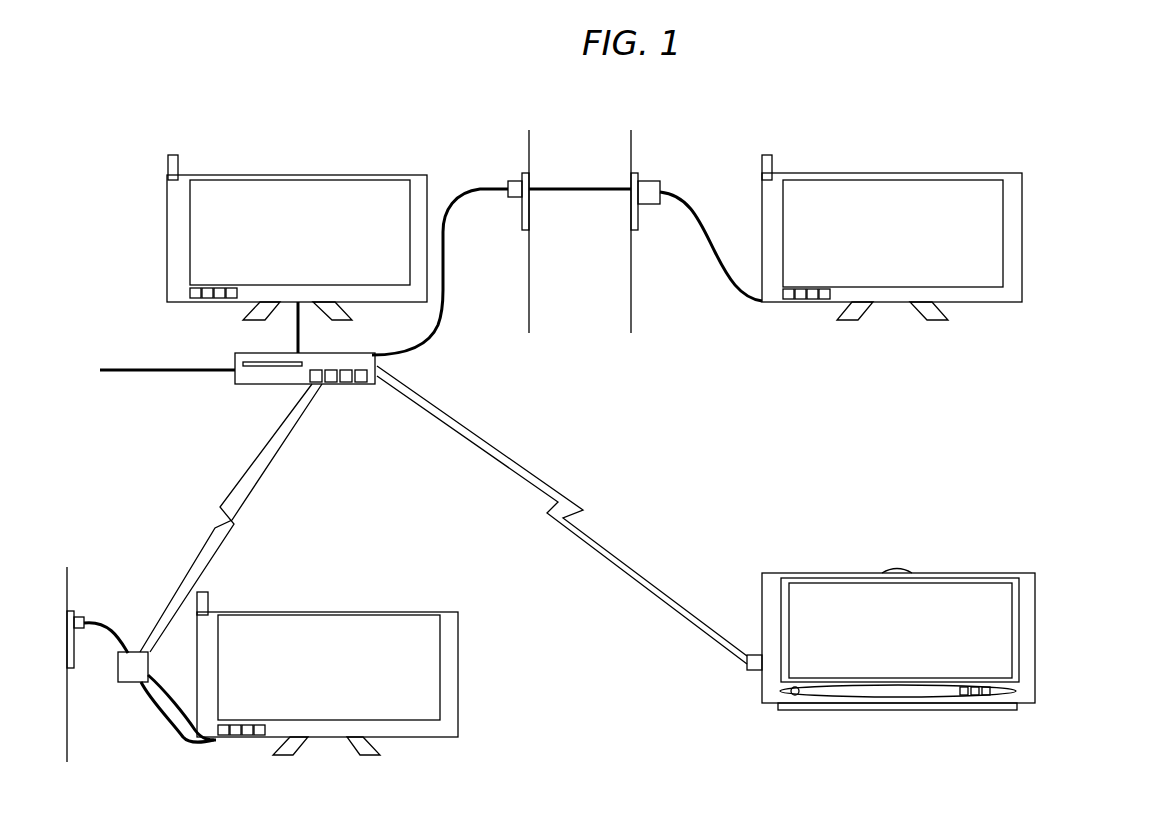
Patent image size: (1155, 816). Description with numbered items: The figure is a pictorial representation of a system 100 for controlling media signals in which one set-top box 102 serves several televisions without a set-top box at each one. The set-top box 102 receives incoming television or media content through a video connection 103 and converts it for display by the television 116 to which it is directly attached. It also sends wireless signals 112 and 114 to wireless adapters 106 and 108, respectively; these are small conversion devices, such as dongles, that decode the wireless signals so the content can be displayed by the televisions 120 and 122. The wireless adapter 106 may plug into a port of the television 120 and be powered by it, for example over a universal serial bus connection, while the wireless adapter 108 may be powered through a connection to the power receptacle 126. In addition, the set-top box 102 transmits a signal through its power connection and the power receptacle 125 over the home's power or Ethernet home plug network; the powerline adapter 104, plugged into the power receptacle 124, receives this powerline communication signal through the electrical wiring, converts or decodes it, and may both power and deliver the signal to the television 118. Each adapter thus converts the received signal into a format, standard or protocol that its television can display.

The system 100 is at (327, 100).
The set-top box 102 is at (275, 377).
The video connection 103 is at (157, 372).
The powerline adapter 104 is at (646, 182).
The wireless adapter 106 is at (747, 662).
The wireless adapter 108 is at (135, 668).
The wireless signal 112 is at (562, 515).
The wireless signal 114 is at (231, 518).
The television 116 is at (314, 234).
The television 118 is at (905, 234).
The television 120 is at (978, 622).
The television 122 is at (341, 670).
The power receptacle 124 is at (634, 232).
The power receptacle 125 is at (527, 233).
The power receptacle 126 is at (73, 662).